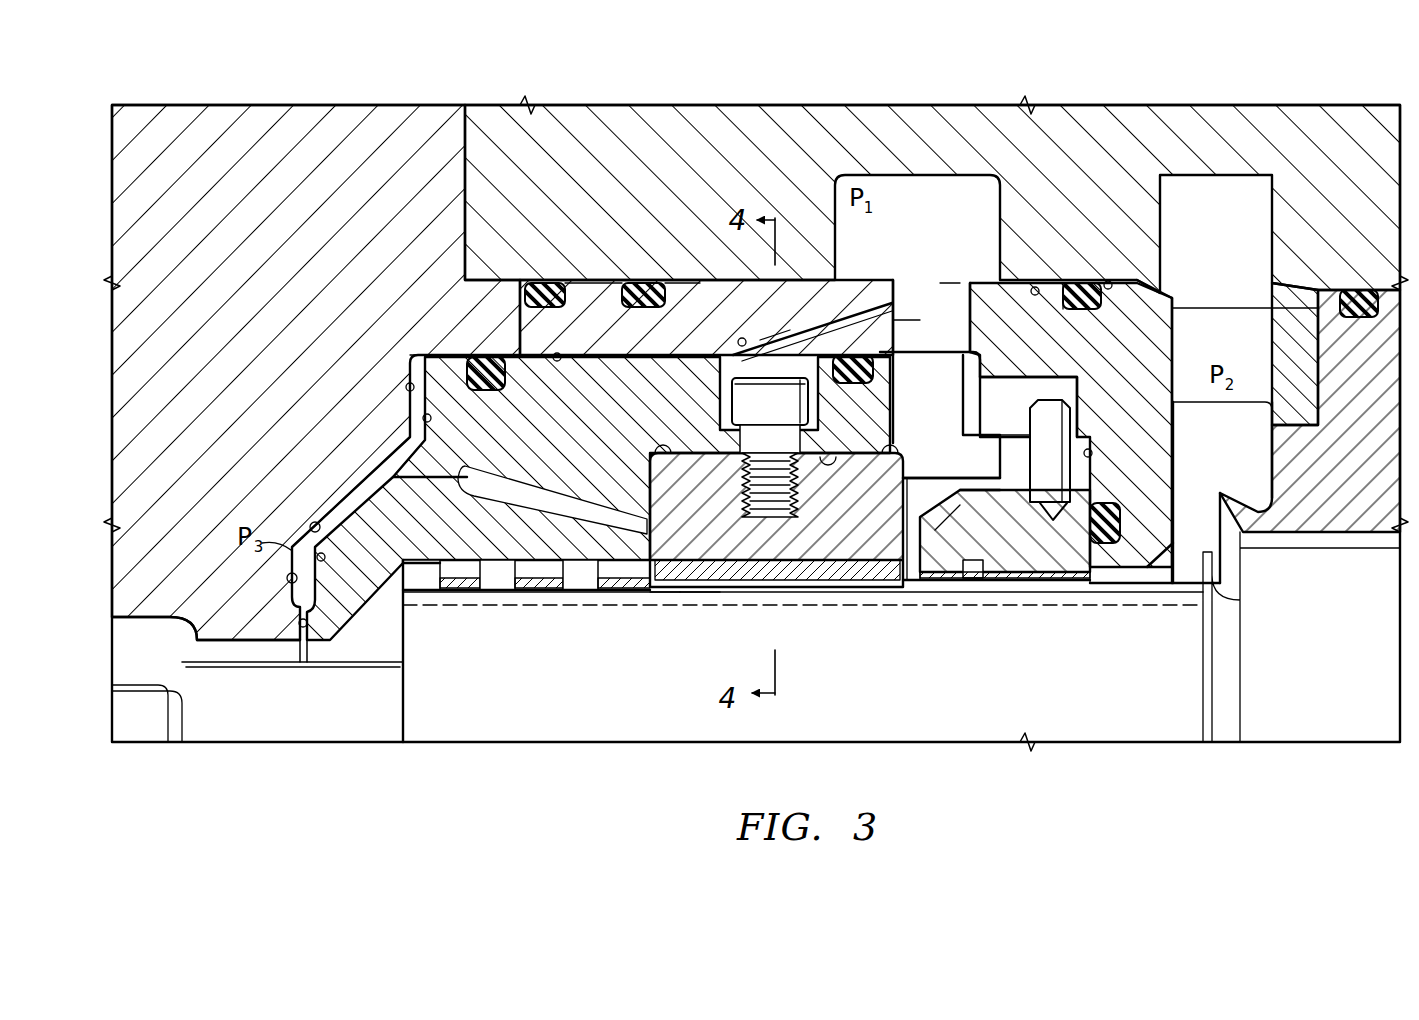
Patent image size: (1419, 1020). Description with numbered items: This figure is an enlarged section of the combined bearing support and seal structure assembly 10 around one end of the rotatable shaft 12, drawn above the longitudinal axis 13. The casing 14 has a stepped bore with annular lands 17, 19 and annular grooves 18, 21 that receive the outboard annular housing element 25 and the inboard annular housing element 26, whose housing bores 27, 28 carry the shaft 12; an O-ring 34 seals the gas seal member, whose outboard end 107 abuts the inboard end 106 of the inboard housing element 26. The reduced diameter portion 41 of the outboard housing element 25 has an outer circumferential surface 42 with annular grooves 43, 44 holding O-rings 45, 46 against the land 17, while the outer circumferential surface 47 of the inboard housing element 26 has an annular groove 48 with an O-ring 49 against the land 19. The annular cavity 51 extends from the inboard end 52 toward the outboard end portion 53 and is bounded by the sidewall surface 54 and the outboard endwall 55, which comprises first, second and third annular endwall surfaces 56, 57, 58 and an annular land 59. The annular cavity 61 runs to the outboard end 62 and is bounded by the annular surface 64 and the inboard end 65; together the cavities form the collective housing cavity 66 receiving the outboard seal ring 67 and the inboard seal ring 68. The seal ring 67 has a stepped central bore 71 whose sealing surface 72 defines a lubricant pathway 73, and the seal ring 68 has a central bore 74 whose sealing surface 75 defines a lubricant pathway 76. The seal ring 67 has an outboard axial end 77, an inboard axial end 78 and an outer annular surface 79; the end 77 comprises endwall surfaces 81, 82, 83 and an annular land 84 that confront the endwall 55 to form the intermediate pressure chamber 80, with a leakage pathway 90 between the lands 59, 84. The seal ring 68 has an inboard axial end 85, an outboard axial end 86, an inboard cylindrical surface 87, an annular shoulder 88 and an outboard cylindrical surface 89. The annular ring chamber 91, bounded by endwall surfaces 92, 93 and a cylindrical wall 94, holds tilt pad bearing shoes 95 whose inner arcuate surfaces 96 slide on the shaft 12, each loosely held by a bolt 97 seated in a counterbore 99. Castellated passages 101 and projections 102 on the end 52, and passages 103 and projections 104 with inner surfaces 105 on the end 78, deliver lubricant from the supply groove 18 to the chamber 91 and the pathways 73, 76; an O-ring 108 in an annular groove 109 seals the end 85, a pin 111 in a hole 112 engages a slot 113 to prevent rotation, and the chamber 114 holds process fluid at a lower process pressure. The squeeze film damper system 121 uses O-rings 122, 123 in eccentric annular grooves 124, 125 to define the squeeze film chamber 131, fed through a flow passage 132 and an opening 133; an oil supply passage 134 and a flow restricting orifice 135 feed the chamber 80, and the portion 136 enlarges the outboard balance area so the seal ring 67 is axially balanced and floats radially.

The combined bearing support and seal structure assembly 10 is at (575, 782).
The rotatable shaft 12 is at (648, 744).
The longitudinal axis 13 is at (498, 744).
The casing 14 is at (1085, 104).
The annular land 17 is at (716, 280).
The annular groove 18 is at (917, 227).
The annular land 19 is at (1110, 281).
The annular groove 21 is at (1216, 241).
The outboard annular housing element 25 is at (171, 103).
The inboard annular housing element 26 is at (1172, 296).
The housing bore 27 is at (185, 640).
The housing bore 28 is at (1135, 590).
The O-ring 34 is at (1358, 289).
The inboard reduced diameter portion 41 is at (706, 317).
The outer circumferential surface 42 is at (618, 278).
The annular groove 43 is at (575, 280).
The annular groove 44 is at (670, 281).
The O-ring 45 is at (544, 282).
The O-ring 46 is at (642, 282).
The outer circumferential surface 47 is at (1036, 296).
The annular groove 48 is at (1086, 312).
The O-ring 49 is at (1060, 310).
The annular cavity 51 is at (553, 353).
The inboard end 52 is at (972, 288).
The outboard end portion 53 is at (110, 566).
The annular sidewall surface 54 is at (586, 353).
The outboard endwall 55 is at (347, 500).
The first annular endwall surface 56 is at (405, 386).
The second annular endwall surface 57 is at (309, 525).
The third annular endwall surface 58 is at (286, 578).
The annular land 59 is at (298, 623).
The annular cavity 61 is at (1092, 432).
The outboard end 62 is at (950, 282).
The longitudinally extending annular surface 64 is at (1050, 451).
The inboard end 65 is at (1094, 453).
The collective annular housing cavity 66 is at (663, 605).
The outboard annular seal ring 67 is at (598, 498).
The inboard annular seal ring 68 is at (1000, 582).
The stepped central bore 71 is at (368, 663).
The annular sealing surface 72 is at (457, 590).
The annular lubricant pathway 73 is at (557, 592).
The central bore 74 is at (1050, 582).
The annular sealing surface 75 is at (1085, 588).
The annular lubricant pathway 76 is at (950, 586).
The outboard axial end 77 is at (405, 424).
The inboard axial end 78 is at (1005, 531).
The outer annular surface 79 is at (603, 358).
The annular intermediate pressure chamber 80 is at (412, 436).
The first annular endwall surface 81 is at (433, 418).
The second annular endwall surface 82 is at (362, 500).
The third annular endwall surface 83 is at (326, 557).
The annular land 84 is at (333, 575).
The inboard axial end 85 is at (1093, 478).
The outboard axial end 86 is at (910, 592).
The inboard generally cylindrical surface 87 is at (1018, 420).
The outboard facing radially extending annular shoulder 88 is at (998, 446).
The outboard generally cylindrical surface 89 is at (904, 503).
The leakage pathway 90 is at (306, 652).
The annular ring chamber 91 is at (692, 602).
The outboard endwall surface 92 is at (646, 468).
The inboard endwall surface 93 is at (900, 532).
The cylindrical wall 94 is at (833, 460).
The tilt pad bearing shoes 95 is at (776, 516).
The inner arcuate surface 96 is at (745, 588).
The bolt 97 is at (770, 447).
The counterbore 99 is at (738, 343).
The radially extending passages 101 is at (905, 318).
The longitudinally extending projections 102 is at (930, 361).
The radially extending passages 103 is at (900, 408).
The longitudinally extending projections 104 is at (951, 416).
The inner surfaces 105 is at (965, 478).
The inboard end 106 is at (1270, 330).
The outboard end 107 is at (1297, 289).
The O-ring 108 is at (1175, 486).
The annular groove 109 is at (1122, 523).
The pin 111 is at (973, 533).
The hole 112 is at (1055, 522).
The longitudinally extending slot 113 is at (978, 374).
The chamber 114 is at (1222, 492).
The squeeze film damper system 121 is at (465, 321).
The O-ring 122 is at (515, 333).
The O-ring 123 is at (840, 331).
The annular groove 124 is at (485, 392).
The annular groove 125 is at (862, 385).
The annular squeeze film chamber 131 is at (662, 360).
The flow passage 132 is at (885, 300).
The opening 133 is at (766, 336).
The oil supply passage 134 is at (535, 590).
The flow restricting orifice 135 is at (465, 482).
The portion 136 is at (369, 660).